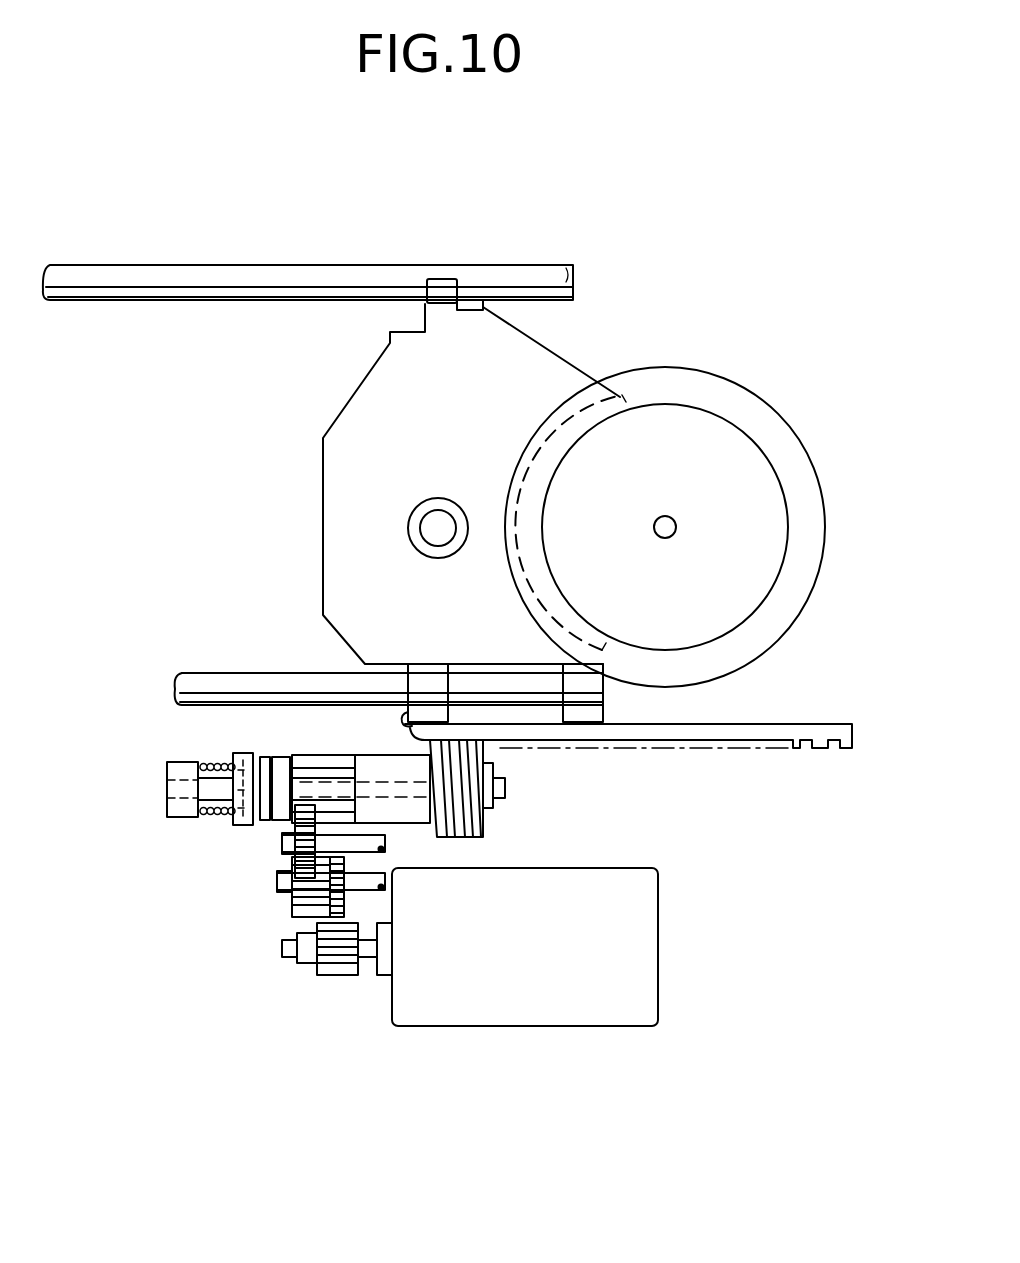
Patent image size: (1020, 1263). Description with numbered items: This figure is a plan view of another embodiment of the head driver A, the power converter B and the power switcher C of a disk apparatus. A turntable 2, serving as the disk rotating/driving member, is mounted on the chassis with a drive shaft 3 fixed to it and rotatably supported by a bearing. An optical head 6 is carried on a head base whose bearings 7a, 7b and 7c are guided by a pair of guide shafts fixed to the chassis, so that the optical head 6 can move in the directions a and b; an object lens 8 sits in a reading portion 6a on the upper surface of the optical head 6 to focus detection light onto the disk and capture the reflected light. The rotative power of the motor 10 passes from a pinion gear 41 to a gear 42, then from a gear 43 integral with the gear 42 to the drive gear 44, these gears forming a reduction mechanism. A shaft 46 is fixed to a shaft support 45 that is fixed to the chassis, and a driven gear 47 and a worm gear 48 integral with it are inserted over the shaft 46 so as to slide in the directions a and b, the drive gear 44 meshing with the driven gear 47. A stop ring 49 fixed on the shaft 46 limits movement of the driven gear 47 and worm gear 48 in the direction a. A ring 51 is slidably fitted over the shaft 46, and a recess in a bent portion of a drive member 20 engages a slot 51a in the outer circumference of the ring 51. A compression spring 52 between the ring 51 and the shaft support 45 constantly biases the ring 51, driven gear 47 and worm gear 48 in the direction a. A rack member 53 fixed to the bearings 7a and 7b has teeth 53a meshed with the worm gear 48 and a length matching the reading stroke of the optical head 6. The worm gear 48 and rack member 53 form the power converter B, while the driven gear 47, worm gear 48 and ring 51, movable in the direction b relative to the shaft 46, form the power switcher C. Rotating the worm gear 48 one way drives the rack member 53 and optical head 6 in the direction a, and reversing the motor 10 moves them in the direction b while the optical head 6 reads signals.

The turntable 2 is at (702, 550).
The drive shaft 3 is at (676, 517).
The optical head 6 is at (571, 360).
The reading portion 6a is at (409, 527).
The bearing 7a is at (607, 708).
The bearing 7b is at (415, 716).
The bearing 7c is at (438, 290).
The object lens 8 is at (437, 527).
The motor 10 is at (549, 1000).
The drive member 20 is at (264, 755).
The pinion gear 41 is at (336, 977).
The gear 42 is at (373, 976).
The gear 43 is at (336, 918).
The drive gear 44 is at (297, 878).
The shaft support 45 is at (167, 807).
The shaft 46 is at (507, 787).
The driven gear 47 is at (293, 835).
The worm gear 48 is at (467, 836).
The stop ring 49 is at (496, 808).
The ring 51 is at (245, 830).
The slot 51a is at (281, 757).
The compression spring 52 is at (225, 765).
The rack member 53 is at (635, 743).
The teeth 53a is at (497, 750).
The head driver A is at (535, 982).
The power converter B is at (635, 779).
The power switcher C is at (218, 768).
The direction a is at (877, 786).
The direction b is at (877, 786).